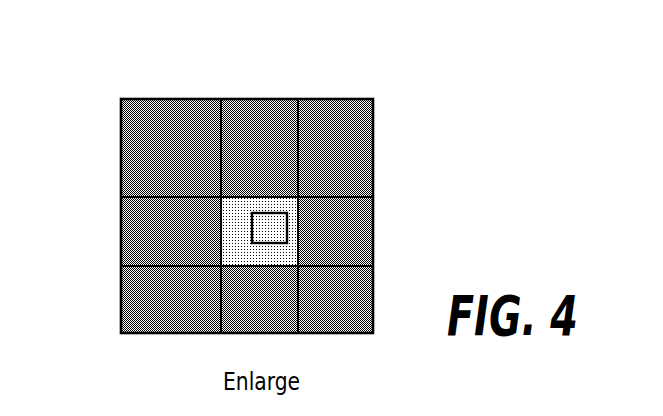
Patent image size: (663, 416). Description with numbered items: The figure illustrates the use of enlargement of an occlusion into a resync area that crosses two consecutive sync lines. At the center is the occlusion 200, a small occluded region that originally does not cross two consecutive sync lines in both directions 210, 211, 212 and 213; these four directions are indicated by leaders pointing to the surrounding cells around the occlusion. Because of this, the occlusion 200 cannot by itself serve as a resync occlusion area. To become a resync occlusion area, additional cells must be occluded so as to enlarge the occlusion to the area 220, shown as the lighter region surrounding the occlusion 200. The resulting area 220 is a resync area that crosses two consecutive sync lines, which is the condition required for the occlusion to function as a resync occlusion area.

The occlusion 200 is at (268, 222).
The direction 210 is at (333, 192).
The direction 211 is at (343, 257).
The direction 212 is at (220, 135).
The direction 213 is at (298, 140).
The area 220 is at (233, 235).